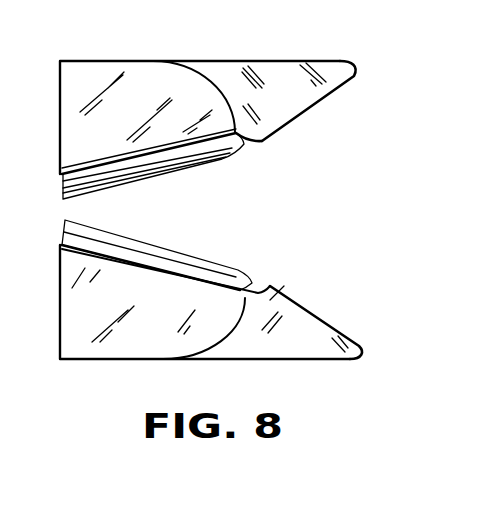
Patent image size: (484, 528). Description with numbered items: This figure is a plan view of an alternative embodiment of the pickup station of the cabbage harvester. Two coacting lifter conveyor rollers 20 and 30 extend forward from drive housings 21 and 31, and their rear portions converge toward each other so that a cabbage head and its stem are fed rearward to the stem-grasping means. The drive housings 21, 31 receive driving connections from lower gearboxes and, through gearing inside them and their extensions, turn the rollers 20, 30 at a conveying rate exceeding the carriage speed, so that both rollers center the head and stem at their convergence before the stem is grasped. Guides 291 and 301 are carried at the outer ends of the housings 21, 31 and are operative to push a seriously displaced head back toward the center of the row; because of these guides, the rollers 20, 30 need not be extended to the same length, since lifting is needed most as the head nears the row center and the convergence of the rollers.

The drive housing 31 is at (105, 66).
The guide 301 is at (302, 68).
The lifter conveyor roller 30 is at (176, 160).
The lifter conveyor roller 20 is at (95, 240).
The drive housing 21 is at (100, 350).
The guide 291 is at (313, 355).